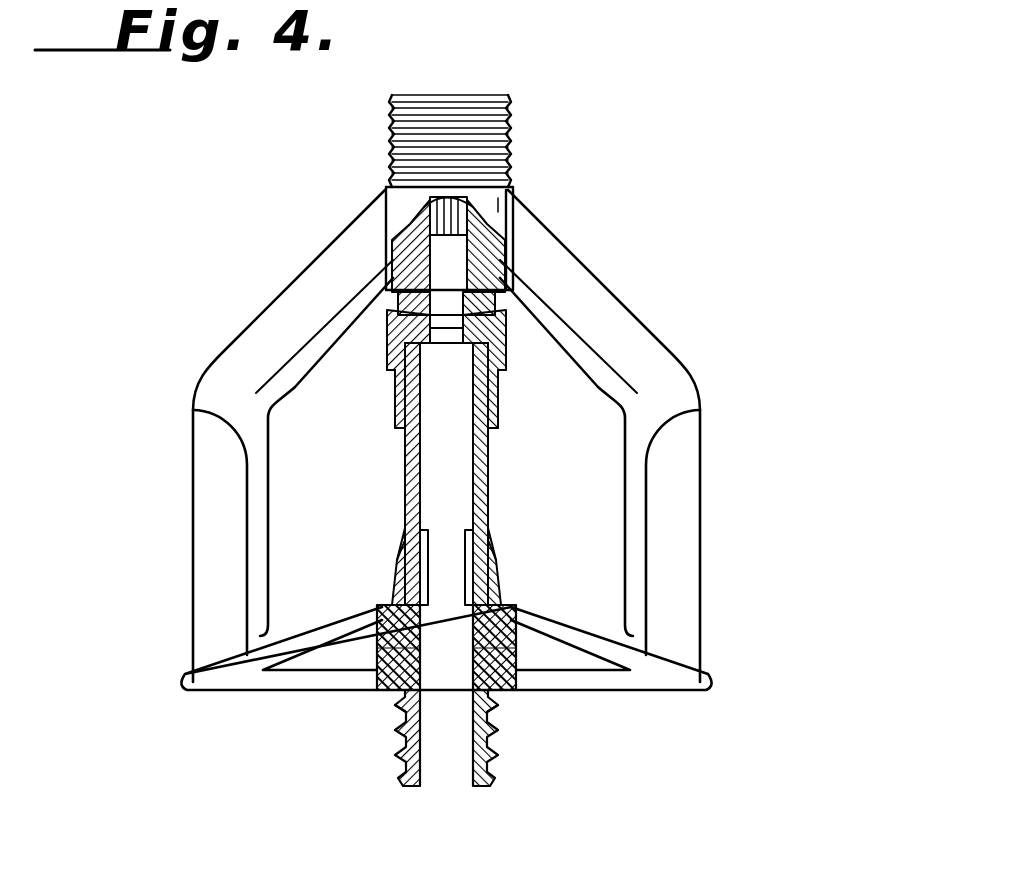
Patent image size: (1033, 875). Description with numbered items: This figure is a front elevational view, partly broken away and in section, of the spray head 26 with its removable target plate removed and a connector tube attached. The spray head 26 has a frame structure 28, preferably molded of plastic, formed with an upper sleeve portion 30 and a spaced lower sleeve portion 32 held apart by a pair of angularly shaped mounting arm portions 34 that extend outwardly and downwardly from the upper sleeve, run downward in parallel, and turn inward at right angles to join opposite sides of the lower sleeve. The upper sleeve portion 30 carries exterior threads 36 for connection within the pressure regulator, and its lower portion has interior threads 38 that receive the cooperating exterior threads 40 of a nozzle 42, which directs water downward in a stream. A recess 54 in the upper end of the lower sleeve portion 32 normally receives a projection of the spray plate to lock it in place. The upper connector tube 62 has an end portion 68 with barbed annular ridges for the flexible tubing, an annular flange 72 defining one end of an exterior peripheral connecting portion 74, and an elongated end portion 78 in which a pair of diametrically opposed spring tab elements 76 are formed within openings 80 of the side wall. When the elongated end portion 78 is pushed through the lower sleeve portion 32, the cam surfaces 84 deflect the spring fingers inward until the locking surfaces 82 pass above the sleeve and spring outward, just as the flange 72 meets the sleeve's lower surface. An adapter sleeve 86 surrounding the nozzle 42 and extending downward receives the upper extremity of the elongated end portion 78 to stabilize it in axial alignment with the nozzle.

The spray head 26 is at (557, 130).
The frame structure 28 is at (446, 430).
The upper sleeve portion 30 is at (400, 210).
The lower sleeve portion 32 is at (423, 674).
The mounting arm portions 34 is at (310, 278).
The exterior threads 36 is at (390, 128).
The interior threads 38 is at (405, 266).
The exterior threads 40 is at (510, 253).
The nozzle 42 is at (498, 352).
The recess 54 is at (500, 608).
The upper connector tube 62 is at (448, 477).
The end portion 68 is at (483, 738).
The annular flange 72 is at (500, 700).
The exterior peripheral connecting portion 74 is at (502, 655).
The spring tab elements 76 is at (400, 565).
The elongated end portion 78 is at (400, 446).
The opening 80 is at (466, 530).
The locking surface 82 is at (395, 612).
The cam surfaces 84 is at (398, 542).
The adapter sleeve 86 is at (392, 375).